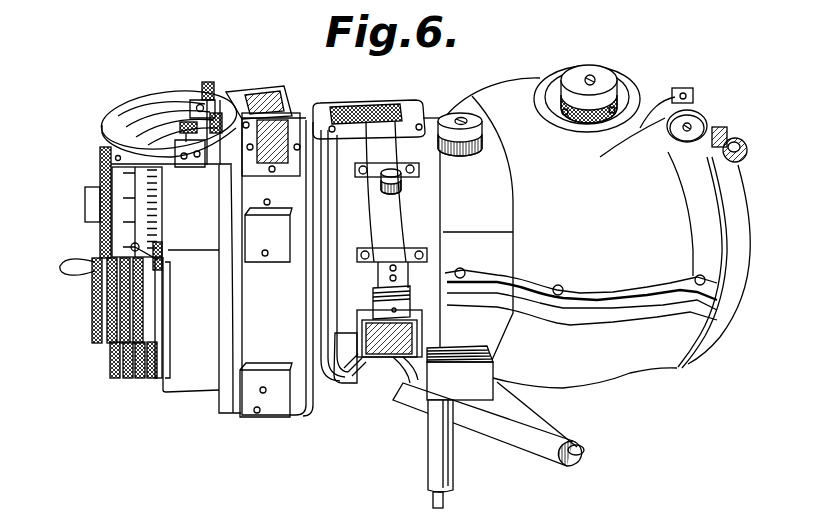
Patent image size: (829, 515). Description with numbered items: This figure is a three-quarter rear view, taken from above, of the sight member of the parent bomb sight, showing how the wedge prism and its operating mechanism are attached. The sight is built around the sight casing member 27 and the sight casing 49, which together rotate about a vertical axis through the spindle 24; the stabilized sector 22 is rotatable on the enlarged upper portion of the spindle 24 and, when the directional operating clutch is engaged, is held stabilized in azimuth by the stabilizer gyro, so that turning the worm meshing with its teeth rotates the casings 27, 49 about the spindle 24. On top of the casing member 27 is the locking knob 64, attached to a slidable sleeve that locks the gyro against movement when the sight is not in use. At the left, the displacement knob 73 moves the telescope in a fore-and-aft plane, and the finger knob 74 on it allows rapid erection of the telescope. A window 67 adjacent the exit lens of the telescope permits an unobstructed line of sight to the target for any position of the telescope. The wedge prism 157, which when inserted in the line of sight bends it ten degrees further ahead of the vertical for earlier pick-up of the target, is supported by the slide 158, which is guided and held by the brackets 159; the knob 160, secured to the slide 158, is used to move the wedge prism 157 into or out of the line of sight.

The stabilized sector 22 is at (521, 444).
The spindle 24 is at (438, 444).
The sight casing member 27 is at (616, 252).
The sight casing 49 is at (290, 315).
The locking knob 64 is at (598, 76).
The window 67 is at (347, 375).
The displacement knob 73 is at (92, 283).
The finger knob 74 is at (72, 266).
The wedge prism 157 is at (387, 352).
The slide 158 is at (404, 222).
The brackets 159 is at (391, 163).
The knob 160 is at (401, 183).